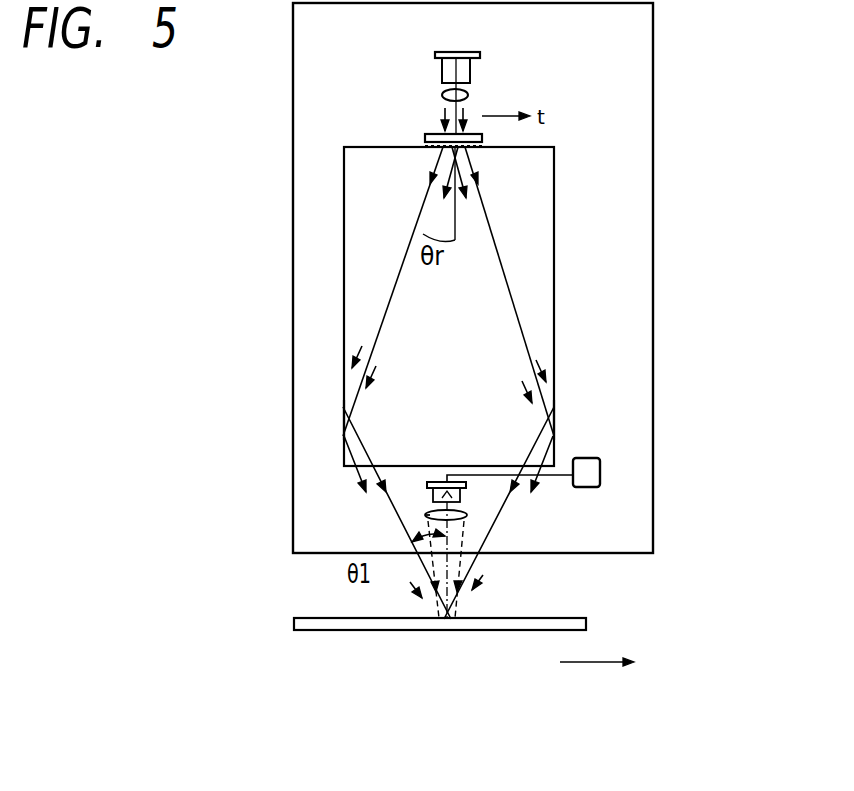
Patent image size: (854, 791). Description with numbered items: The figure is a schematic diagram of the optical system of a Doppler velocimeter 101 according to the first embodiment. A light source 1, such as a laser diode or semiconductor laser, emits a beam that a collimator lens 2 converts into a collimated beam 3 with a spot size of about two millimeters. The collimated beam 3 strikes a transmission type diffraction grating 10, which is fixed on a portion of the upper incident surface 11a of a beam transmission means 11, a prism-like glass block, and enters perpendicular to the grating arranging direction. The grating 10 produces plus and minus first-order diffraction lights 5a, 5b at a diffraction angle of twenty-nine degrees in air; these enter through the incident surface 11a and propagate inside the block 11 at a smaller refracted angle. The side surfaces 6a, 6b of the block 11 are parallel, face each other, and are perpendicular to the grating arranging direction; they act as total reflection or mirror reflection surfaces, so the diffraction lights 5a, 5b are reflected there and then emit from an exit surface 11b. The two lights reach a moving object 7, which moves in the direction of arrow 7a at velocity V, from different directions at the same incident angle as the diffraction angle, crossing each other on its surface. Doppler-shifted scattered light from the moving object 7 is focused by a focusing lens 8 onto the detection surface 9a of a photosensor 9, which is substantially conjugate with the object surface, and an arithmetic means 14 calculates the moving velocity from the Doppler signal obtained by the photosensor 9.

The light source 1 is at (470, 68).
The collimator lens 2 is at (468, 95).
The collimated beam 3 is at (440, 130).
The diffraction light 5a is at (400, 291).
The diffraction light 5b is at (503, 291).
The reflection surface 6a is at (343, 417).
The reflection surface 6b is at (554, 425).
The moving object 7 is at (315, 632).
The arrow 7a is at (576, 664).
The focusing lens 8 is at (466, 515).
The photosensor 9 is at (461, 495).
The detection surface 9a is at (425, 515).
The diffraction grating 10 is at (482, 139).
The beam transmission means 11 is at (554, 240).
The incident surface 11a is at (370, 146).
The exit surface 11b is at (408, 472).
The arithmetic means 14 is at (600, 475).
The Doppler velocimeter 101 is at (653, 312).